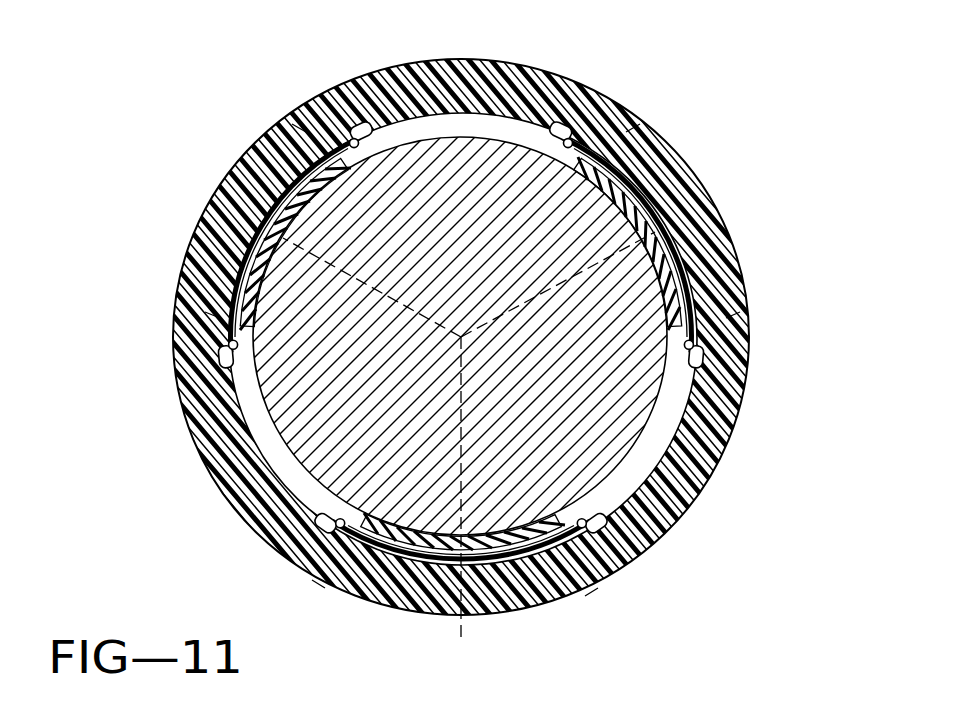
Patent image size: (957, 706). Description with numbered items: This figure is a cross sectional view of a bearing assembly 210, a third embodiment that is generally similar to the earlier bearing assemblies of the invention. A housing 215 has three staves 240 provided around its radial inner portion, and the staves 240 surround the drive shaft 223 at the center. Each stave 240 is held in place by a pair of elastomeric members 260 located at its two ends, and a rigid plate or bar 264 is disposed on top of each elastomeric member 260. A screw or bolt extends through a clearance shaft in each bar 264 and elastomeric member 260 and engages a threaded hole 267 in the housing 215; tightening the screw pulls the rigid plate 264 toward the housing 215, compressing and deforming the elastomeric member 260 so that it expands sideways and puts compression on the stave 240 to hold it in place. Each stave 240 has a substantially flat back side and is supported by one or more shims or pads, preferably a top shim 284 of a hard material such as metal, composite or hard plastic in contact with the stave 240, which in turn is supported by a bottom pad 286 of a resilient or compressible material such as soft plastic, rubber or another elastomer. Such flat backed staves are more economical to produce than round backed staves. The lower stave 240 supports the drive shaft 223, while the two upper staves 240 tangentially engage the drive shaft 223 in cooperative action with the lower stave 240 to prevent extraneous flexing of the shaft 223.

The bearing assembly 210 is at (98, 165).
The housing 215 is at (212, 441).
The drive shaft 223 is at (562, 410).
The stave 240 is at (232, 266).
The elastomeric member 260 is at (345, 128).
The rigid plate or bar 264 is at (354, 138).
The threaded hole 267 is at (300, 125).
The top shim 284 is at (310, 190).
The bottom pad 286 is at (240, 222).